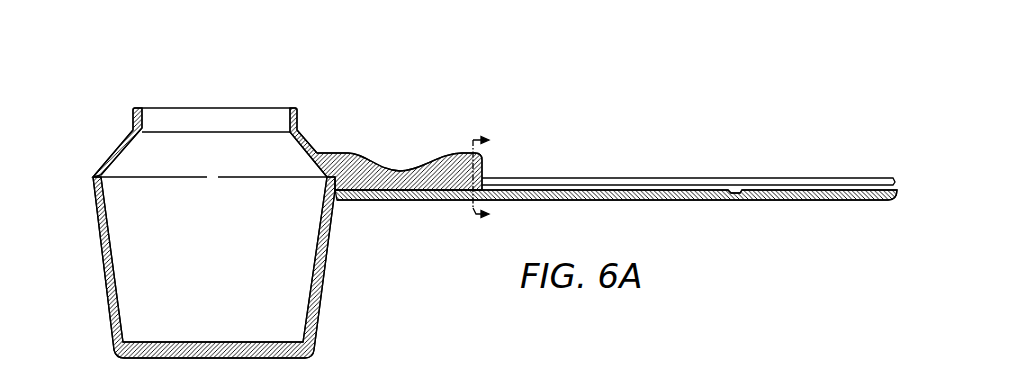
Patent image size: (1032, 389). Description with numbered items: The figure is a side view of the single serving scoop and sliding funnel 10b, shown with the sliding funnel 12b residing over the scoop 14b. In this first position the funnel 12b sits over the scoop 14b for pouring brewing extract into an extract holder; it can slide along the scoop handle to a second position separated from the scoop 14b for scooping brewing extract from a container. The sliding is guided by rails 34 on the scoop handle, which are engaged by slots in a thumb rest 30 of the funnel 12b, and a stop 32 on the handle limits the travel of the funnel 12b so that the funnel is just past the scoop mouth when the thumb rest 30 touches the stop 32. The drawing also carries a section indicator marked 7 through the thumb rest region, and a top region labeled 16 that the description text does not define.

The single serving scoop and sliding funnel 10b is at (355, 67).
The sliding funnel 12b is at (119, 138).
The scoop 14b is at (328, 250).
The top wall 16 is at (215, 127).
The thumb rest 30 is at (405, 176).
The stop 32 is at (733, 187).
The rails 34 is at (523, 190).
The section line 7- 7 is at (488, 181).